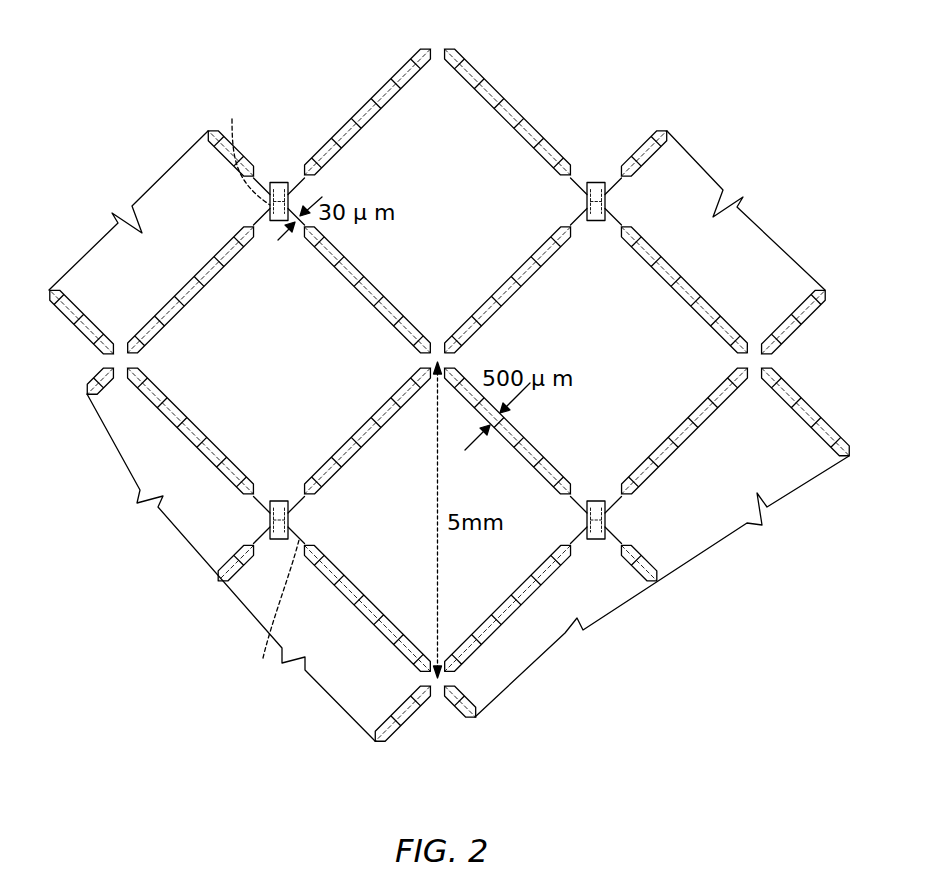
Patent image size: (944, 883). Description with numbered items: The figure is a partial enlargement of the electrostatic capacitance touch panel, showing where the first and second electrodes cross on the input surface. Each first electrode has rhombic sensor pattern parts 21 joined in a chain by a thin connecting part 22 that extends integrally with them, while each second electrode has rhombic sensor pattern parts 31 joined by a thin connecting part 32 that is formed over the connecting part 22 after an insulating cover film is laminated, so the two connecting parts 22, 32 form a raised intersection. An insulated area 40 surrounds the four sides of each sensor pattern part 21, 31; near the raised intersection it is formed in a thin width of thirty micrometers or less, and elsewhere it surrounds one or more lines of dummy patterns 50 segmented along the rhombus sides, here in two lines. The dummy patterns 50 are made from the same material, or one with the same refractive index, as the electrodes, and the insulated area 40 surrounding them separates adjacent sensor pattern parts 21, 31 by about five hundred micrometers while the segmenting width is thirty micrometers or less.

The sensor pattern part 21 is at (157, 202).
The connecting part 22 is at (257, 392).
The sensor pattern part 31 is at (188, 382).
The connecting part 32 is at (281, 183).
The insulated area 40 is at (270, 184).
The dummy pattern 50 is at (383, 293).